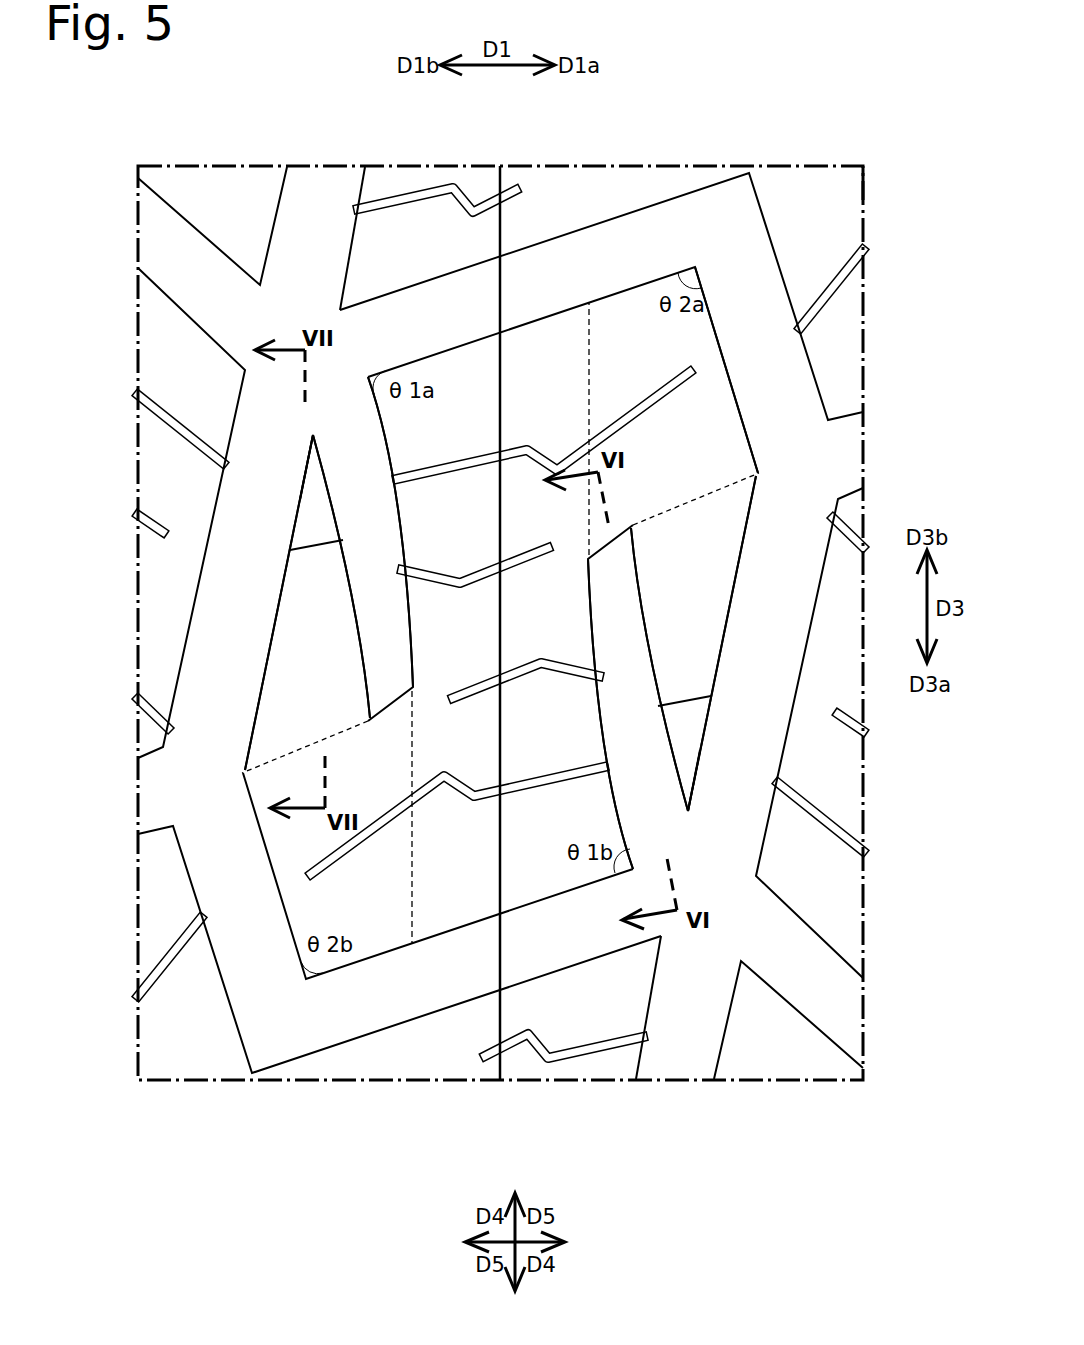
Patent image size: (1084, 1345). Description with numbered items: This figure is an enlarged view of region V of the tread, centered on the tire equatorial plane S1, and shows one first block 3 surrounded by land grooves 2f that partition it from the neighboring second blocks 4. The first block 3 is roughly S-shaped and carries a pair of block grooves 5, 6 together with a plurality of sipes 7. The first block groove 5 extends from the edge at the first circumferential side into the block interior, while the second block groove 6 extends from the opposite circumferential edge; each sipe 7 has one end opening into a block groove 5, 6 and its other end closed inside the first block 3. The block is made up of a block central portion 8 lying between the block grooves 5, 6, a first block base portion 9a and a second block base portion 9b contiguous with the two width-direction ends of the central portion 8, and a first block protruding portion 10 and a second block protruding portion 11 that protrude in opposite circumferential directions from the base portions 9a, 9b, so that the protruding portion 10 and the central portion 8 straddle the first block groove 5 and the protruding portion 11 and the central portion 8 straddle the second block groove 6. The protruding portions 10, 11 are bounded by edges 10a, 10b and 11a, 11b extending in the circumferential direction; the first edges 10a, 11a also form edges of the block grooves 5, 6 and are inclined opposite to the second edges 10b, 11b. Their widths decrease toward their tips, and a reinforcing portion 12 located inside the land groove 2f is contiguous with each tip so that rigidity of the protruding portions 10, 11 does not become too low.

The land groove 2f is at (625, 226).
The first block 3 is at (760, 450).
The second block 4 is at (862, 210).
The first block groove 5 is at (634, 583).
The second block groove 6 is at (368, 664).
The sipe 7 is at (533, 430).
The block central portion 8 is at (525, 622).
The first block base portion 9a is at (671, 458).
The second block base portion 9b is at (351, 896).
The first block protruding portion 10 is at (670, 622).
The first edge of first block protruding portion 10a is at (648, 690).
The second edge of first block protruding portion 10b is at (746, 557).
The second block protruding portion 11 is at (303, 642).
The first edge of second block protruding portion 11a is at (366, 597).
The second edge of second block protruding portion 11b is at (260, 673).
The reinforcing portion 12 is at (297, 512).
The tire equatorial plane S1 is at (499, 231).
The region V is at (813, 165).